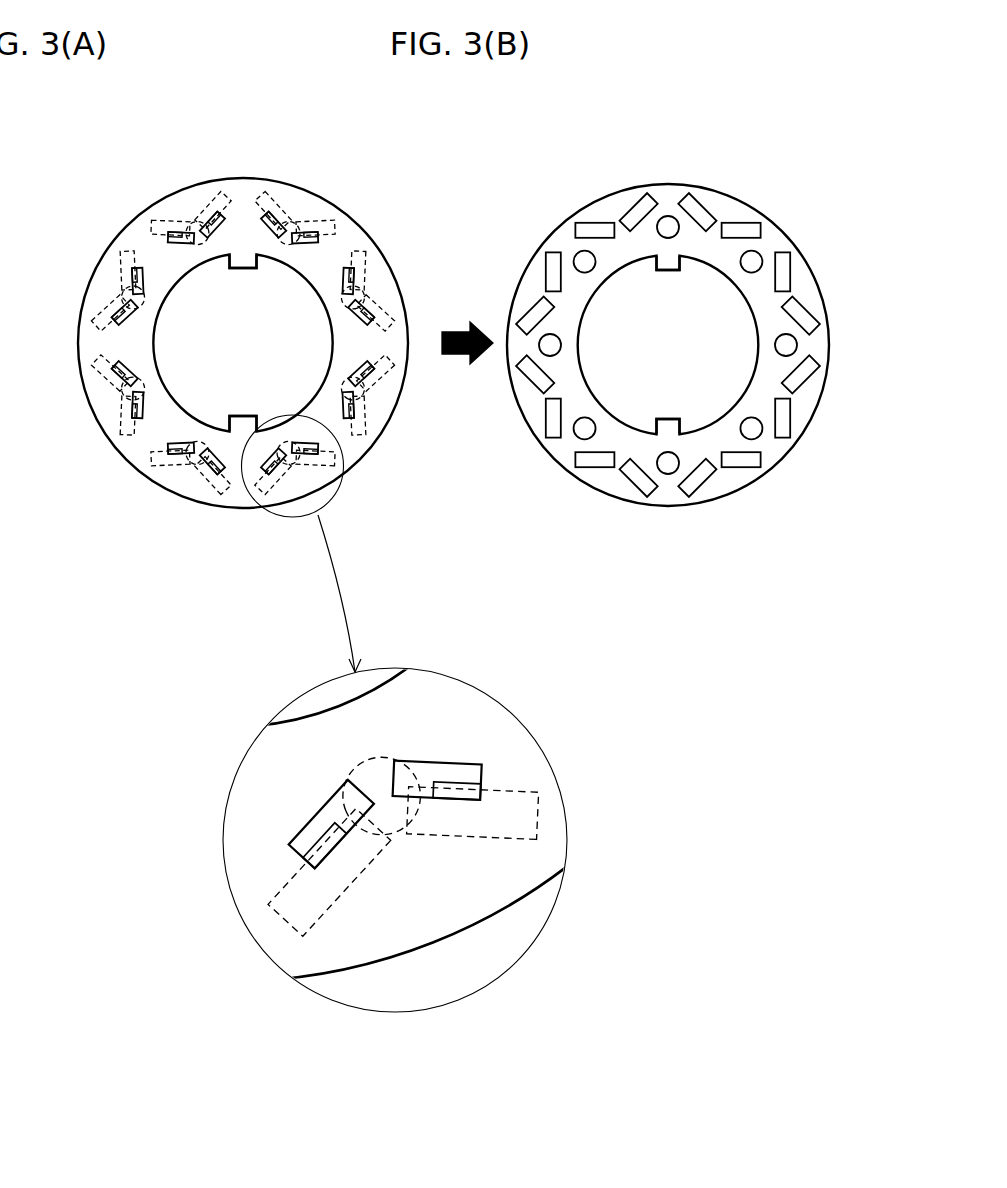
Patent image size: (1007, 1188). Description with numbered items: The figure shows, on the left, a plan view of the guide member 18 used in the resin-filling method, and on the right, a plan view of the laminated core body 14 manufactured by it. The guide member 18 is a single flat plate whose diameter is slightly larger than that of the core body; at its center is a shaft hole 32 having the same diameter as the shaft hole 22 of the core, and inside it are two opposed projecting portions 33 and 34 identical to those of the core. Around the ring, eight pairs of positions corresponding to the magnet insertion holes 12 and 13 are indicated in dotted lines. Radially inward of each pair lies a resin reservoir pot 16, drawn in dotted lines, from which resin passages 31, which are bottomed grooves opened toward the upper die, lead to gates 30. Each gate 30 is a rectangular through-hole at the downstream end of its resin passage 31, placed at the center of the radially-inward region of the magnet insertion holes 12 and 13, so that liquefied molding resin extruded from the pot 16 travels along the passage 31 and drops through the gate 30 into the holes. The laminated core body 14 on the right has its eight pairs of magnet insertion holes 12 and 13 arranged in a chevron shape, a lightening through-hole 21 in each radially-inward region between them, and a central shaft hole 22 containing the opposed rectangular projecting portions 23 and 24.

In FIG. 3A, the magnet insertion hole 12 is at (403, 307).
In FIG. 3B, the magnet insertion hole 12 is at (731, 230).
In FIG. 3A, the magnet insertion hole 13 is at (373, 253).
In FIG. 3B, the magnet insertion hole 13 is at (785, 258).
In FIG. 3B, the laminated core body 14 is at (751, 188).
In FIG. 3A, the resin reservoir pot 16 is at (373, 753).
In FIG. 3A, the guide member 18 is at (322, 193).
In FIG. 3B, the through-hole 21 is at (756, 257).
In FIG. 3B, the shaft hole 22 is at (585, 375).
In FIG. 3B, the projecting portion 23 is at (672, 415).
In FIG. 3B, the projecting portion 24 is at (668, 268).
In FIG. 3A, the gate 30 is at (310, 233).
In FIG. 3A, the resin passage 31 is at (296, 240).
In FIG. 3A, the shaft hole 32 is at (153, 377).
In FIG. 3A, the projecting portion 33 is at (229, 428).
In FIG. 3A, the projecting portion 34 is at (240, 260).